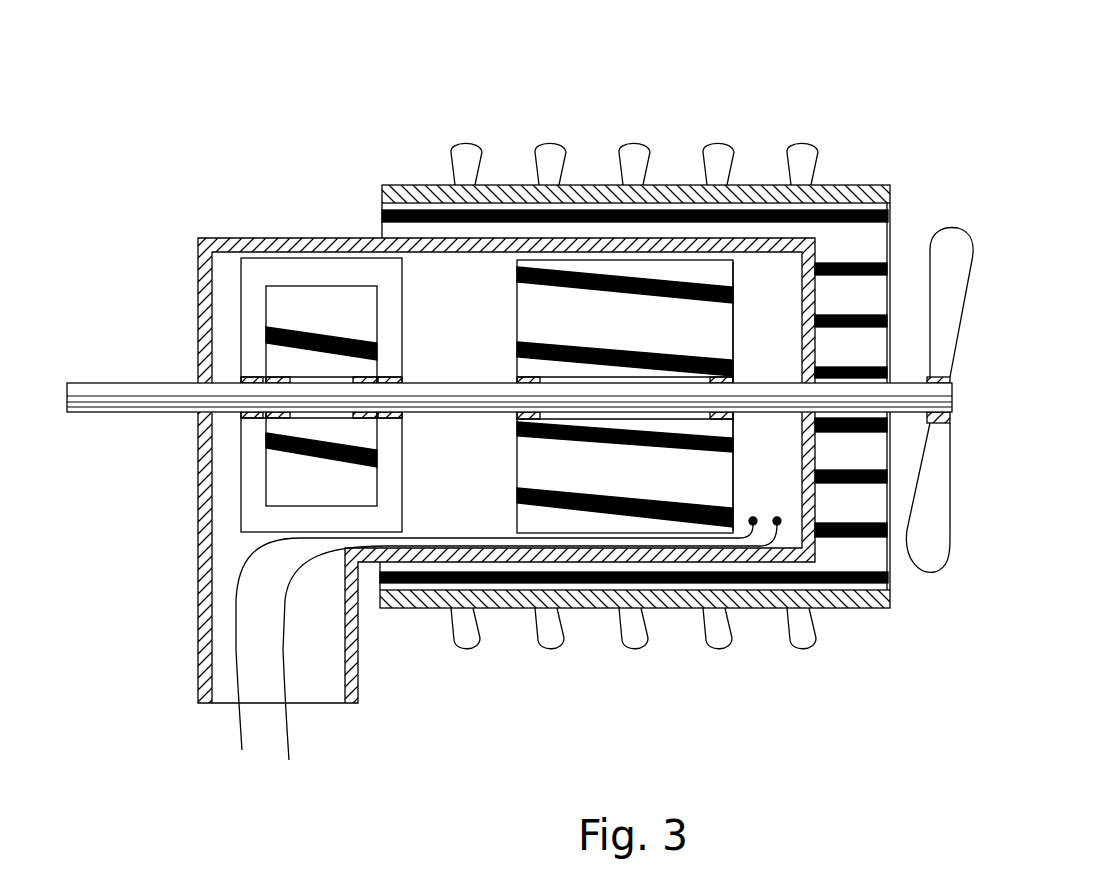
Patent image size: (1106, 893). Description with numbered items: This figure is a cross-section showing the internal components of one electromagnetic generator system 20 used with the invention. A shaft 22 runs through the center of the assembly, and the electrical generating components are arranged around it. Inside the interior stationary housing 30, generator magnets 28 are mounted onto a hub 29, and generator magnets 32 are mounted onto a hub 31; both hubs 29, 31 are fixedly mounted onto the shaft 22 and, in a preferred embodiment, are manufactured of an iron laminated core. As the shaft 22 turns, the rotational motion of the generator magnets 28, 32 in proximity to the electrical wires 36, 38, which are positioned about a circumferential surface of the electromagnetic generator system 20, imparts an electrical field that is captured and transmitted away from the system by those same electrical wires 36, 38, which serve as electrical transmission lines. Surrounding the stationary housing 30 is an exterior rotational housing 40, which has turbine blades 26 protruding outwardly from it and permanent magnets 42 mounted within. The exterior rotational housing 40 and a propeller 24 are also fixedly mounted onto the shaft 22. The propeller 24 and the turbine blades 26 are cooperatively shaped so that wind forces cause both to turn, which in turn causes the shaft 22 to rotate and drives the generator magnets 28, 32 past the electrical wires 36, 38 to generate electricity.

The electromagnetic generator system 20 is at (355, 130).
The shaft 22 is at (900, 403).
The propeller 24 is at (968, 232).
The turbine blades 26 is at (812, 648).
The generator magnets 28 is at (557, 343).
The hub 29 is at (733, 325).
The interior stationary housing 30 is at (237, 238).
The hub 31 is at (265, 308).
The generator magnets 32 is at (350, 342).
The electrical wire 36 is at (240, 720).
The electrical wire 38 is at (290, 727).
The exterior rotational housing 40 is at (382, 186).
The permanent magnets 42 is at (838, 262).